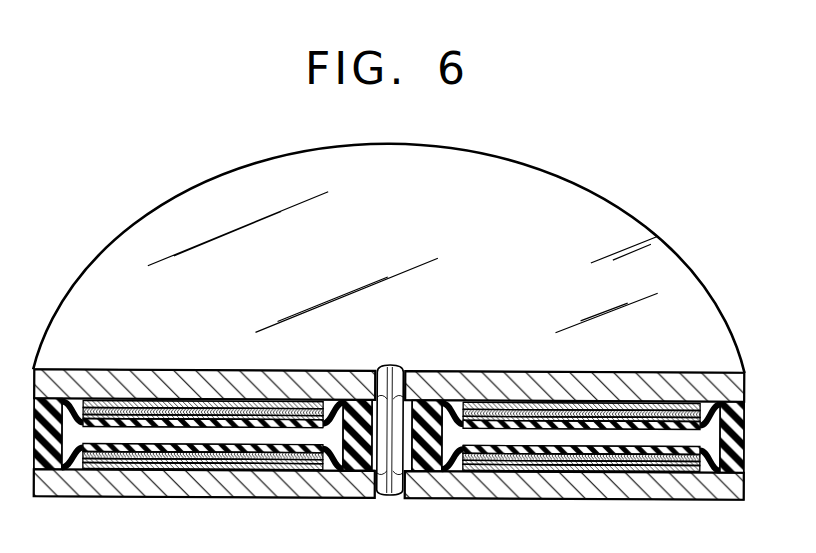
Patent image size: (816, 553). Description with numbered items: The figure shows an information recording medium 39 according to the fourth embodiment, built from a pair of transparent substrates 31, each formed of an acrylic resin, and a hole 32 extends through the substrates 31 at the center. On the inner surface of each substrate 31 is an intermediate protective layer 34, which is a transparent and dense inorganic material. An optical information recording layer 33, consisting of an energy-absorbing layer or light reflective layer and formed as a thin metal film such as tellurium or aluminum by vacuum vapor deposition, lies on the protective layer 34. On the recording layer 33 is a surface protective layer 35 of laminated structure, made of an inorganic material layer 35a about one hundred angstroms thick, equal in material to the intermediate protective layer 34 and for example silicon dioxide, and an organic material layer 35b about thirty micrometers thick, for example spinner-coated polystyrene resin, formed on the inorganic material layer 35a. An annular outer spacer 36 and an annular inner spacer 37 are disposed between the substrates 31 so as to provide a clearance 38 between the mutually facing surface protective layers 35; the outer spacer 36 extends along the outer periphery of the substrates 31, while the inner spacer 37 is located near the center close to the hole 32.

The transparent substrate 31 is at (725, 393).
The hole 32 is at (398, 364).
The optical information recording layer 33 is at (628, 414).
The intermediate protective layer 34 is at (670, 402).
The surface protective layer 35 is at (390, 437).
The inorganic material layer 35a is at (524, 411).
The organic material layer 35b is at (80, 402).
The annular outer spacer 36 is at (740, 437).
The annular inner spacer 37 is at (368, 473).
The clearance 38 is at (188, 435).
The information recording medium 39 is at (628, 205).